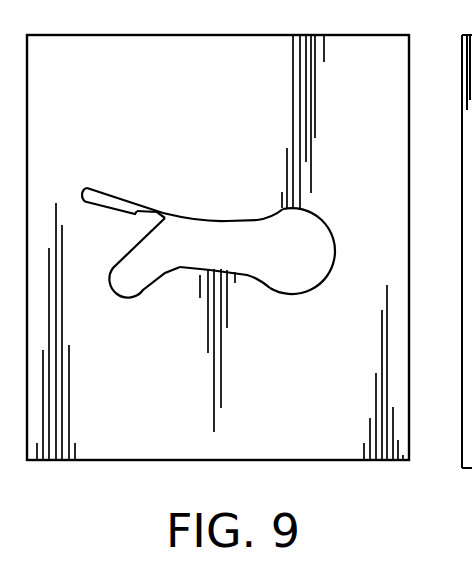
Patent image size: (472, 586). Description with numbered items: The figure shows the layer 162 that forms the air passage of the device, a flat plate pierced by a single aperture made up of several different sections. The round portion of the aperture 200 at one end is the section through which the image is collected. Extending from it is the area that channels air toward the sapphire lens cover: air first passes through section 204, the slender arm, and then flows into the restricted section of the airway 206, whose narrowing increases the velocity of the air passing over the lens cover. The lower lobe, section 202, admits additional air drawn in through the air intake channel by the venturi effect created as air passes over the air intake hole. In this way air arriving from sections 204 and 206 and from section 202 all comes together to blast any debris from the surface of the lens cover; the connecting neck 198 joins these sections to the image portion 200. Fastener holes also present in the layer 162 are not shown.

The layer 162 is at (65, 88).
The neck 198 is at (207, 250).
The portion of the aperture 200 is at (297, 245).
The section 202 is at (130, 273).
The section 204 is at (95, 193).
The restricted section of the airway 206 is at (160, 212).